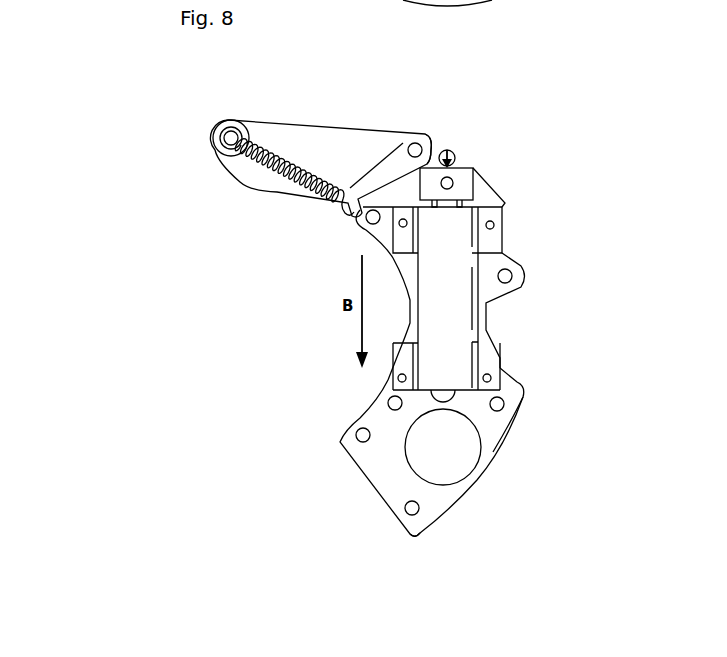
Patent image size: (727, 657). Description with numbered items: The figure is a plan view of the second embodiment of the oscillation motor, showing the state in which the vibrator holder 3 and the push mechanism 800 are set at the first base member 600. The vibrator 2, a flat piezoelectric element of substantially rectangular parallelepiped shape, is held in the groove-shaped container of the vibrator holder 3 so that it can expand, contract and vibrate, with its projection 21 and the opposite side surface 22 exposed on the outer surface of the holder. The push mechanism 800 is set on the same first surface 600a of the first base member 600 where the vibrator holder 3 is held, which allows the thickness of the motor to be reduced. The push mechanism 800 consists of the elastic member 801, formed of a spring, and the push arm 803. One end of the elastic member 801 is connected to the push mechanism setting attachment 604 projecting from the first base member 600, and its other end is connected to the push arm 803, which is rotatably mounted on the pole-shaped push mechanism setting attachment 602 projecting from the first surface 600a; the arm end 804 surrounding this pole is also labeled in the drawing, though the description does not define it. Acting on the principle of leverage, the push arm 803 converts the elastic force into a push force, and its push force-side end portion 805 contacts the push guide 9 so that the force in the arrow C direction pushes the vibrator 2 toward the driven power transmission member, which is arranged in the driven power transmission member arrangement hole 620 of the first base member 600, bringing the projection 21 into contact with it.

The push mechanism 800 is at (277, 142).
The elastic member 801 is at (288, 182).
The push mechanism setting attachment 604 is at (220, 140).
The push arm 803 is at (383, 153).
The push mechanism setting attachment 602 is at (421, 150).
The lever end 804 is at (430, 148).
The push force-side end portion 805 is at (458, 158).
The push guide 9 is at (467, 190).
The opposite side surface 22 is at (478, 200).
The vibrator 2 is at (468, 332).
The vibrator holder 3 is at (485, 343).
The projection 21 is at (487, 420).
The driven power transmission member arrangement hole 620 is at (460, 468).
The first base member 600 is at (457, 505).
The first surface 600a is at (418, 523).